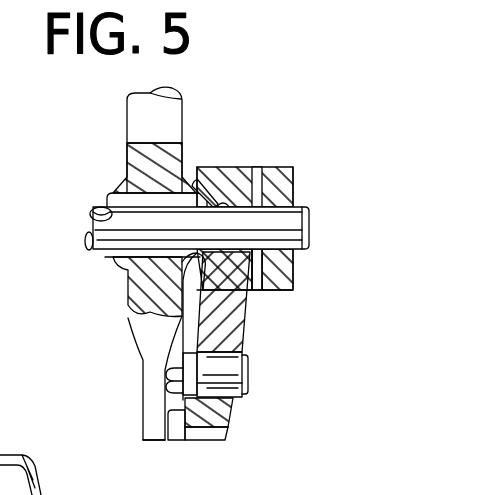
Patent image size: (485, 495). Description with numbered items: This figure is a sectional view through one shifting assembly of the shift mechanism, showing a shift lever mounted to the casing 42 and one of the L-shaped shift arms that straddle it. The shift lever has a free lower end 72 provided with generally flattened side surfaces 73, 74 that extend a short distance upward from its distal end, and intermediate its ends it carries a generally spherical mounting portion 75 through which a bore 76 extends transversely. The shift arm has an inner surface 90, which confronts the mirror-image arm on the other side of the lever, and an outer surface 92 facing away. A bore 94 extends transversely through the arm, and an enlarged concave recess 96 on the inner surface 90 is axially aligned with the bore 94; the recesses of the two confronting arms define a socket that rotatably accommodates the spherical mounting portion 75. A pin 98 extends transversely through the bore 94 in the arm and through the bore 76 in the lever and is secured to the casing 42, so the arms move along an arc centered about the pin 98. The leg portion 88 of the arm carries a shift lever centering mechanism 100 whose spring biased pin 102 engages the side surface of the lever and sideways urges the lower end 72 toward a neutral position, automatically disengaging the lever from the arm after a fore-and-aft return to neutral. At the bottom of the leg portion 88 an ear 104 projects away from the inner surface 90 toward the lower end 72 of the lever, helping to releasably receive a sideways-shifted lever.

The casing 42 is at (286, 182).
The free lower end 72 is at (144, 412).
The flattened side surface 73 is at (220, 403).
The flattened side surface 74 is at (149, 434).
The spherical mounting portion 75 is at (118, 263).
The bore 76 is at (100, 207).
The second leg portion 88 is at (220, 421).
The inner surface 90 is at (181, 334).
The outer surface 92 is at (244, 330).
The bore 94 is at (226, 203).
The concave recess 96 is at (201, 262).
The pin 98 is at (103, 232).
The shift lever centering mechanism 100 is at (249, 380).
The spring biased pin 102 is at (181, 382).
The ear 104 is at (178, 444).